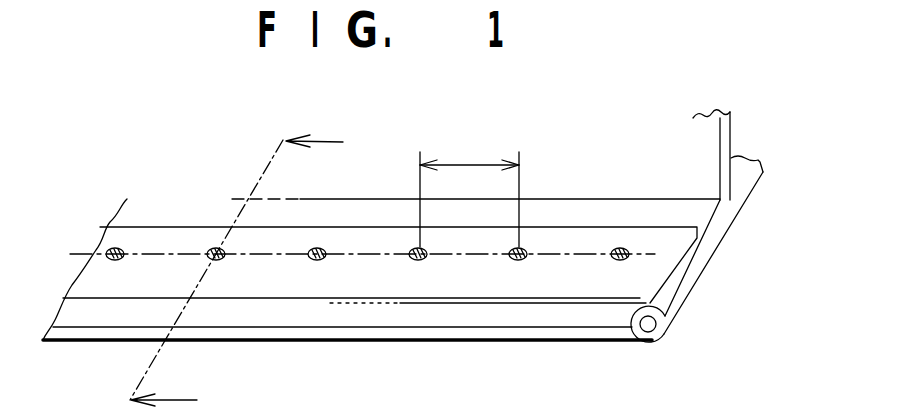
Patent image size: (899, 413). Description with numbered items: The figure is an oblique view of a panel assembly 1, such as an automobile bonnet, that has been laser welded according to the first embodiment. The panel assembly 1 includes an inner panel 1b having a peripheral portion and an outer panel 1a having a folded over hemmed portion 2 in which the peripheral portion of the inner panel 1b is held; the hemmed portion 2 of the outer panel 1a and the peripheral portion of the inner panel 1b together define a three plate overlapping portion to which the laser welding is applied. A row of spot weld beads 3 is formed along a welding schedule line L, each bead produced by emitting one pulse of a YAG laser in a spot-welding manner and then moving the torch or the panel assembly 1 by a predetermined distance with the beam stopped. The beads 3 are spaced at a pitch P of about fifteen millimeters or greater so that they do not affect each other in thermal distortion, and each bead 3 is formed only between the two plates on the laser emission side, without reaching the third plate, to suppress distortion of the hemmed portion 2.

The panel assembly 1 is at (403, 201).
The outer panel 1a is at (743, 174).
The inner panel 1b is at (723, 182).
The hemmed portion 2 is at (475, 278).
The spot weld bead 3 is at (216, 248).
The welding schedule line L is at (352, 257).
The pitch of holes P is at (477, 166).